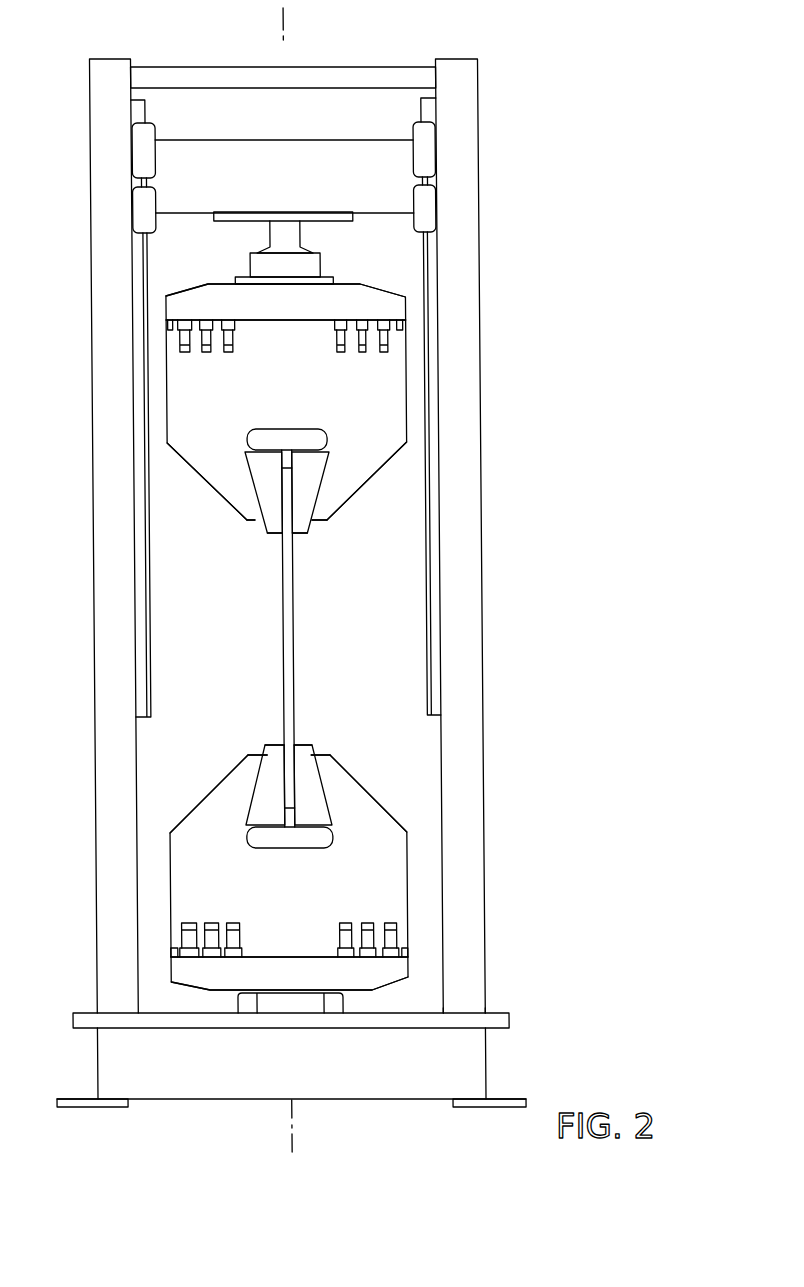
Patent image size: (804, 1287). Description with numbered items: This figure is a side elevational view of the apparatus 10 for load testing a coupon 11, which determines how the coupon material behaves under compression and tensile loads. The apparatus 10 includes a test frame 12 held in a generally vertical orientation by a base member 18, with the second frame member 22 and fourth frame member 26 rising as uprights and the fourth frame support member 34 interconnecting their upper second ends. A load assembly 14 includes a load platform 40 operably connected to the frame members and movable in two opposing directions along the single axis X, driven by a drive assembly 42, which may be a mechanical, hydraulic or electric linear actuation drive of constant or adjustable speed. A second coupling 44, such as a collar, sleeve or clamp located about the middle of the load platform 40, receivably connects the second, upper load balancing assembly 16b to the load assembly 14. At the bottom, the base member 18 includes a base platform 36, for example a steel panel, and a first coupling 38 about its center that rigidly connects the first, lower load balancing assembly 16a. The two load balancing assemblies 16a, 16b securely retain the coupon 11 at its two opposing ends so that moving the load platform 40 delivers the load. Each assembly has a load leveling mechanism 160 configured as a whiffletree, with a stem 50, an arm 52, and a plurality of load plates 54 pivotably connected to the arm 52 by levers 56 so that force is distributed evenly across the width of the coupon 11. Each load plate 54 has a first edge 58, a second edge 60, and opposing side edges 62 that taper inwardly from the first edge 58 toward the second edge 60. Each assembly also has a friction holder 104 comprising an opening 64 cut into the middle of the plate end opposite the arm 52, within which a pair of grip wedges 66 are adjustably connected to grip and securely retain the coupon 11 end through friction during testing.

The apparatus for load testing a coupon 10 is at (536, 78).
The coupon 11 is at (288, 618).
The test frame 12 is at (104, 293).
The load assembly 14 is at (395, 190).
The first load balancing assembly 16a is at (403, 863).
The second load balancing assembly 16b is at (406, 376).
The base member 18 is at (476, 1063).
The second frame member 22 is at (470, 506).
The fourth frame member 26 is at (99, 564).
The fourth frame support member 34 is at (371, 68).
The base platform 36 is at (435, 1011).
The first coupling 38 is at (336, 1003).
The load platform 40 is at (303, 146).
The drive assembly 42 is at (133, 146).
The second coupling 44 is at (342, 222).
The stem 50 is at (267, 226).
The arm 52 is at (384, 298).
The load plate 54 is at (215, 478).
The lever 56 is at (226, 352).
The first edge 58 is at (404, 322).
The second edge 60 is at (314, 521).
The side edges 62 is at (181, 460).
The opening 64 is at (323, 441).
The grip wedges 66 is at (314, 464).
The friction holder 104 is at (264, 531).
The load leveling mechanism 160 is at (164, 325).